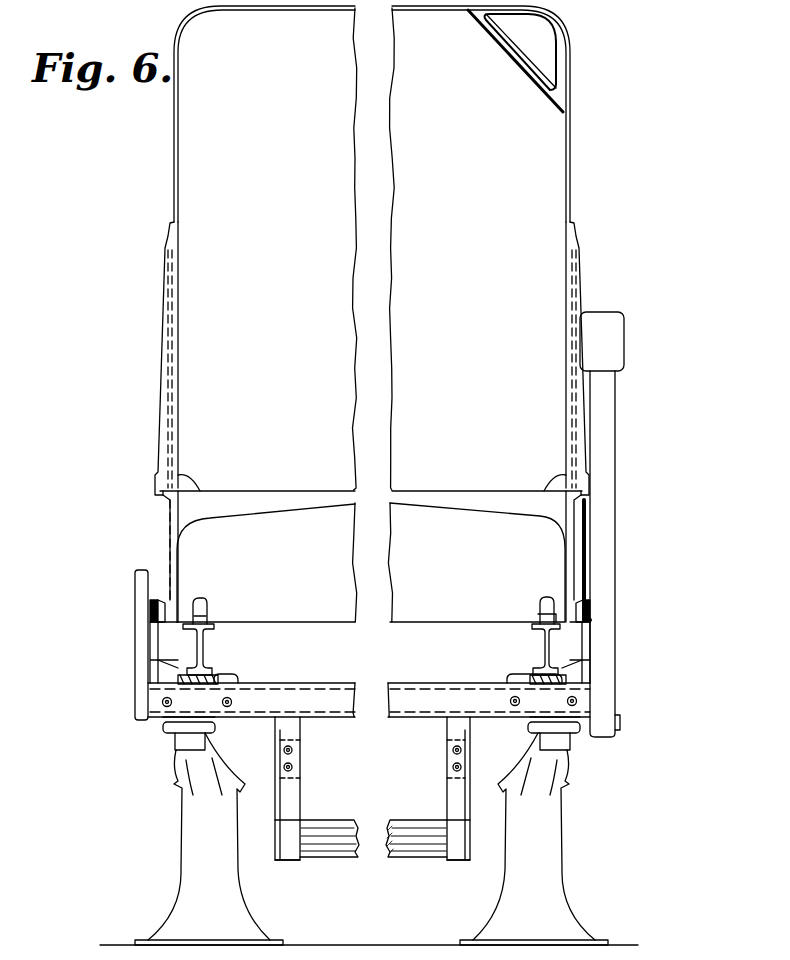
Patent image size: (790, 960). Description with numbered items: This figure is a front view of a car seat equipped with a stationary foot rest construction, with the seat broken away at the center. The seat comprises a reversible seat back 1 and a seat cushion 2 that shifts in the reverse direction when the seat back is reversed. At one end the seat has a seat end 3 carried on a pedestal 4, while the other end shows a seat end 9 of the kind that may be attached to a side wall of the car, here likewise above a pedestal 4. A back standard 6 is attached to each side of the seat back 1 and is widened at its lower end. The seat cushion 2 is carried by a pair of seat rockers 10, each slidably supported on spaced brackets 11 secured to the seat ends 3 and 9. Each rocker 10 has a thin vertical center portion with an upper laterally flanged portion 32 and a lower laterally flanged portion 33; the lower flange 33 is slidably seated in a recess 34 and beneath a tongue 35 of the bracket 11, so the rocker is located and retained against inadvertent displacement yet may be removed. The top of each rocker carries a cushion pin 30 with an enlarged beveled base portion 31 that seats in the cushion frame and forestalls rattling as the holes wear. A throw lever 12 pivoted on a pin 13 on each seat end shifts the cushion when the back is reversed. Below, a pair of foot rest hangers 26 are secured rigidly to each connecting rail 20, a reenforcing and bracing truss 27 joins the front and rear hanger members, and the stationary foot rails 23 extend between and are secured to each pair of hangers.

The seat back 1 is at (410, 105).
The seat cushion 2 is at (400, 548).
The seat end 3 is at (608, 570).
The pedestal 4 is at (195, 868).
The back standard 6 is at (163, 506).
The seat end 9 is at (145, 693).
The seat rocker 10 is at (205, 650).
The bracket 11 is at (195, 712).
The throw lever 12 is at (150, 614).
The pin 13 is at (160, 644).
The connecting rail 20 is at (392, 696).
The stationary foot rail 23 is at (391, 822).
The foot rest hanger 26 is at (288, 806).
The reenforcing and bracing truss 27 is at (300, 752).
The cushion pin 30 is at (547, 600).
The enlarged beveled base portion 31 is at (540, 617).
The upper laterally flanged portion 32 is at (215, 630).
The lower laterally flanged portion 33 is at (218, 670).
The recess 34 is at (192, 688).
The tongue 35 is at (185, 671).